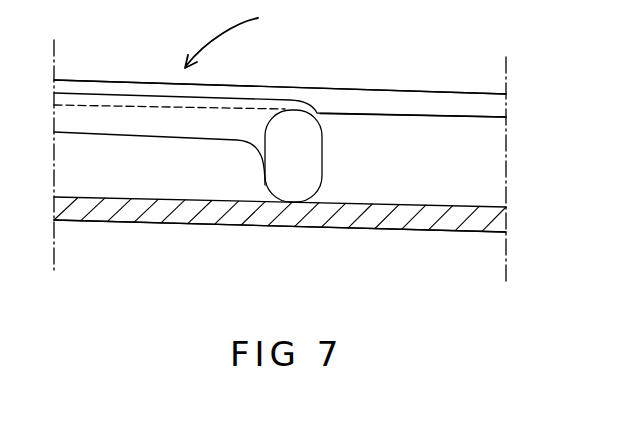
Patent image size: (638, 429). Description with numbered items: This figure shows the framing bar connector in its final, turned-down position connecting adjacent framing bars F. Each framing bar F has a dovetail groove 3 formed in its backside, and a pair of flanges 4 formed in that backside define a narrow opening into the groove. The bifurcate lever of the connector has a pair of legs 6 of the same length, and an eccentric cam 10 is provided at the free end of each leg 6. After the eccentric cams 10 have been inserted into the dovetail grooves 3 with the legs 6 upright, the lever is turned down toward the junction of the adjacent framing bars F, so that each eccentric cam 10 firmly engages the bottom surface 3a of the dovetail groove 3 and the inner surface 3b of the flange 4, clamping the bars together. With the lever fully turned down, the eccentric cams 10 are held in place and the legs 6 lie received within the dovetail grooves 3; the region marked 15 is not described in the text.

The dovetail groove 3 is at (483, 158).
The bottom surface of the dovetail groove 3a is at (381, 193).
The inner surface of the flange 3b is at (404, 126).
The flange 4 is at (354, 101).
The leg 6 is at (130, 128).
The eccentric cam 10 is at (307, 168).
The contact gap 15 is at (262, 152).
The framing bar F is at (437, 238).